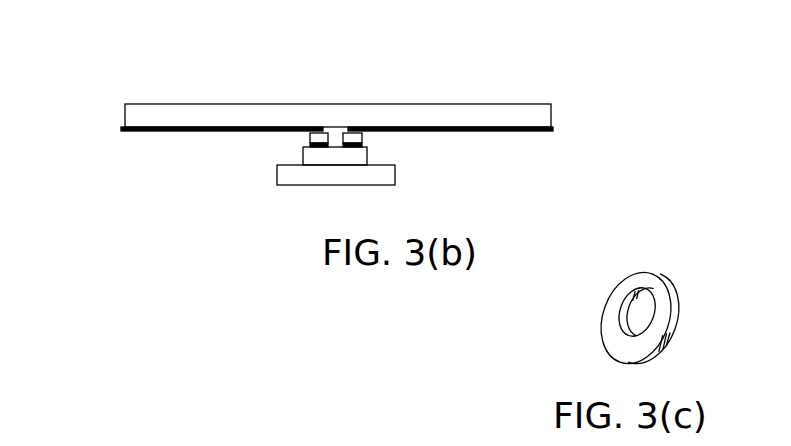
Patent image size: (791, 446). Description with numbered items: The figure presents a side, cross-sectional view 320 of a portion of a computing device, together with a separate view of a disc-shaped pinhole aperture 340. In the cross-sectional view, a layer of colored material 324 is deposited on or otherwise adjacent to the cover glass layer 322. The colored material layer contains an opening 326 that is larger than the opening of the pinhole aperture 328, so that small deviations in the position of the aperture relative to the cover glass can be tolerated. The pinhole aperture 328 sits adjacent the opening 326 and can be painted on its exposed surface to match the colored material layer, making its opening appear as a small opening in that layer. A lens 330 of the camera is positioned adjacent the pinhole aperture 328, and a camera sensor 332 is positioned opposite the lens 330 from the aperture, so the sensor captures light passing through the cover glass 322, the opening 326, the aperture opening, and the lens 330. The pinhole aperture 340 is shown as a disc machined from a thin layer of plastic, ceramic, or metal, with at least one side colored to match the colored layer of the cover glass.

In FIG. 3B, the side, cross-sectional view 320 is at (578, 78).
In FIG. 3B, the cover glass layer 322 is at (124, 117).
In FIG. 3B, the layer of colored material 324 is at (121, 130).
In FIG. 3B, the opening 326 is at (335, 121).
In FIG. 3B, the pinhole aperture 328 is at (375, 140).
In FIG. 3B, the lens 330 is at (303, 147).
In FIG. 3B, the camera sensor 332 is at (277, 180).
In FIG. 3C, the pinhole aperture 340 is at (717, 278).